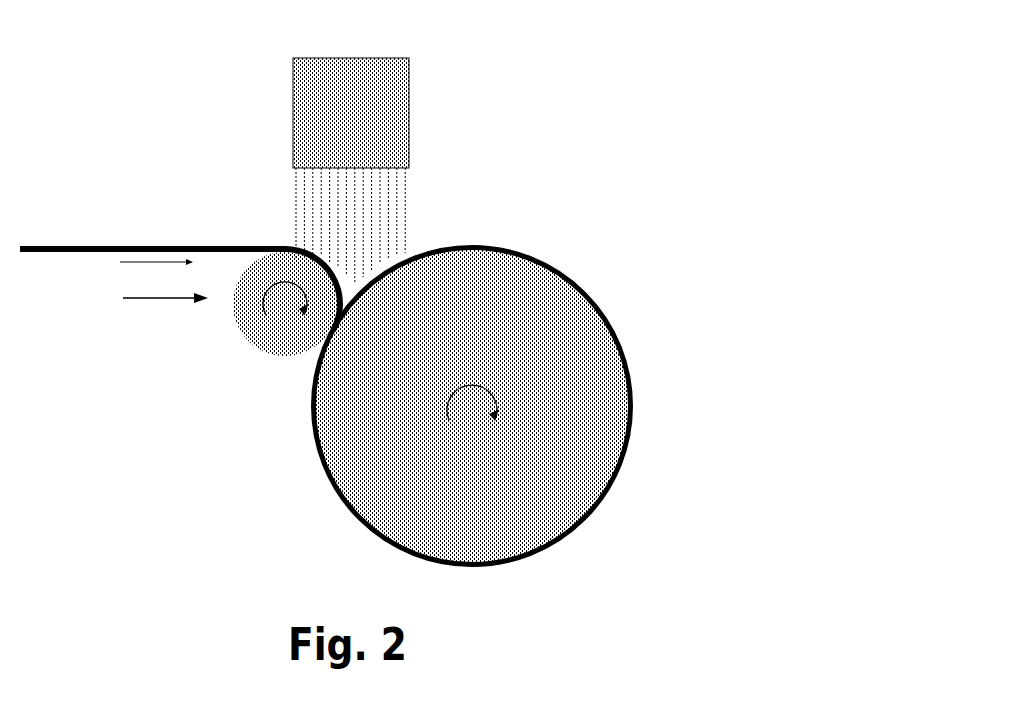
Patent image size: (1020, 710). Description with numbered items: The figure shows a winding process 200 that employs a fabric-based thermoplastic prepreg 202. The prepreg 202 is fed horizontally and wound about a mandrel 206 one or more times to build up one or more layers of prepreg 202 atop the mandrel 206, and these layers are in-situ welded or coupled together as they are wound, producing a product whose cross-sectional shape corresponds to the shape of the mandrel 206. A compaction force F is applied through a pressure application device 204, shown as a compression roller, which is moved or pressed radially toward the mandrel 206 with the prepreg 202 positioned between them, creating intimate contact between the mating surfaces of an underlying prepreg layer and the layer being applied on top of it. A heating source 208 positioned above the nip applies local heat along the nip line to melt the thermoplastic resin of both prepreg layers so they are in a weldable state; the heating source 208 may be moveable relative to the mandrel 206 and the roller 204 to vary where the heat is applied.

The winding process 200 is at (670, 160).
The fabric-based thermoplastic prepreg 202 is at (83, 246).
The pressure application device 204 is at (267, 335).
The mandrel 206 is at (583, 422).
The heating source 208 is at (393, 103).